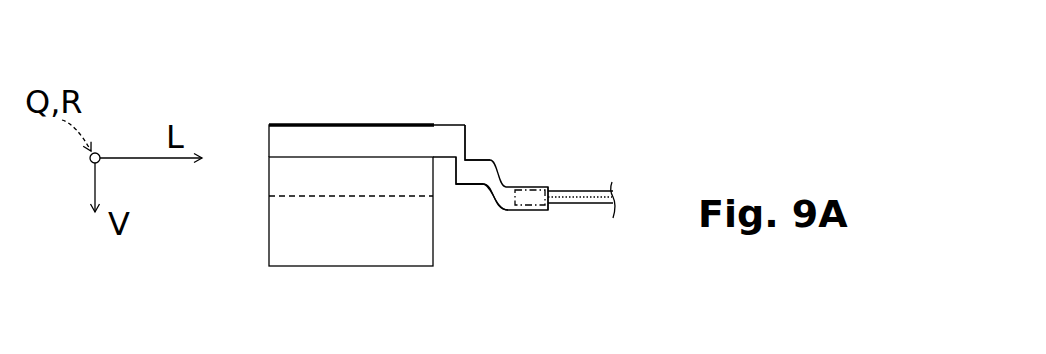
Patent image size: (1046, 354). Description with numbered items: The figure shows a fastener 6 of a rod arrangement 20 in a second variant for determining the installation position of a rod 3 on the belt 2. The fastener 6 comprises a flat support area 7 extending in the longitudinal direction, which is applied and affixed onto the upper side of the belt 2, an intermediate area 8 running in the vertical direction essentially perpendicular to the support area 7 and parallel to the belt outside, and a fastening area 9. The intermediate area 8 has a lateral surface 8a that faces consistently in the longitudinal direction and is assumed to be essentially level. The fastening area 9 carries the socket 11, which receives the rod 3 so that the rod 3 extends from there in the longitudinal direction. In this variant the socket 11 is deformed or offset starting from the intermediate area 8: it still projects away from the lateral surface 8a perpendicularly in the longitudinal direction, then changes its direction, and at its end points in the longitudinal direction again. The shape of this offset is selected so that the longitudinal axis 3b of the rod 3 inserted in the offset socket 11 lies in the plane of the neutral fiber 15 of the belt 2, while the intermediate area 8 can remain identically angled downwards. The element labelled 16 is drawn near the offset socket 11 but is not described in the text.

The rod arrangement 20 is at (643, 82).
The belt 2 is at (343, 246).
The neutral fiber 15 is at (307, 198).
The support area 7 is at (287, 139).
The fastener 6 is at (467, 125).
The intermediate area 8 is at (459, 154).
The lateral surface 8a is at (469, 153).
The fastening area 9 is at (498, 228).
The socket 11 is at (477, 189).
The connector block 16 is at (504, 187).
The rod 3 is at (612, 183).
The longitudinal axis 3b is at (573, 196).